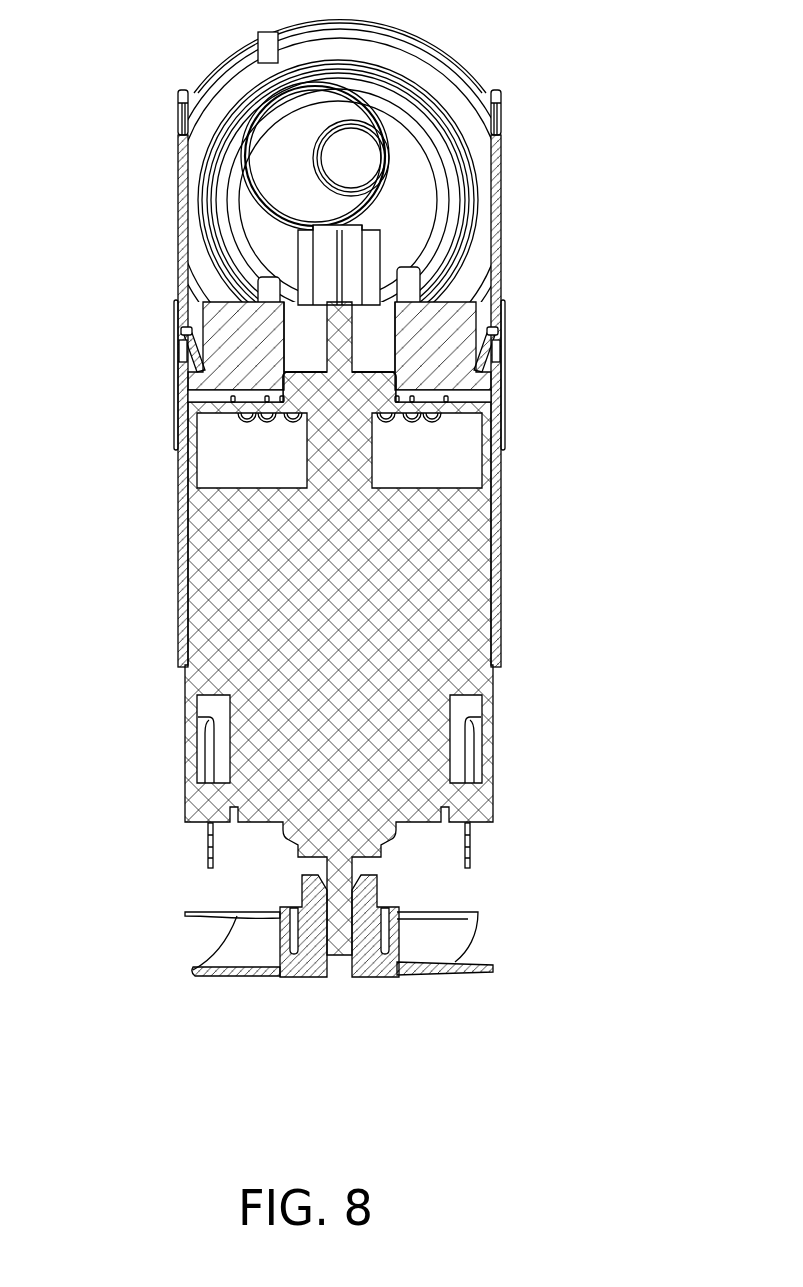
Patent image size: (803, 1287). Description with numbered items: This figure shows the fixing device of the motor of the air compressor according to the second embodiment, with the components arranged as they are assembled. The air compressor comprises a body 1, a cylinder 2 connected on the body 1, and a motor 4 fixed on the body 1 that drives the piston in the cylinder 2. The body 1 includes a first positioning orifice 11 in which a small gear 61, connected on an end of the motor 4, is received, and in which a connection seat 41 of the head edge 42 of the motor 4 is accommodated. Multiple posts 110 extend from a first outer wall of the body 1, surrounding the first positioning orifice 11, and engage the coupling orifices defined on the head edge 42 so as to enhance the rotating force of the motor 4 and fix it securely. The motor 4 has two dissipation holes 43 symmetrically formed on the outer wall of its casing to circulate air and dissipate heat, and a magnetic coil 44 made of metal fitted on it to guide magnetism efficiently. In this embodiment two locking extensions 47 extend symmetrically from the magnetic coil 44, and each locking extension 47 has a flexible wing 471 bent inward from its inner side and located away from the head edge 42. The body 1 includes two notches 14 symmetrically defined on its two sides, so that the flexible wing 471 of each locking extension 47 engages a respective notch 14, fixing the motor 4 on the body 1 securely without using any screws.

The body 1 is at (453, 318).
The first positioning orifice 11 is at (365, 330).
The notch 14 is at (180, 352).
The cylinder 2 is at (417, 72).
The motor 4 is at (447, 638).
The connection seat 41 is at (293, 386).
The head edge 42 is at (463, 396).
The dissipation hole 43 is at (205, 735).
The magnetic coil 44 is at (183, 602).
The locking extension 47 is at (182, 358).
The flexible wing 471 is at (182, 353).
The small gear 61 is at (323, 240).
The post 110 is at (250, 418).